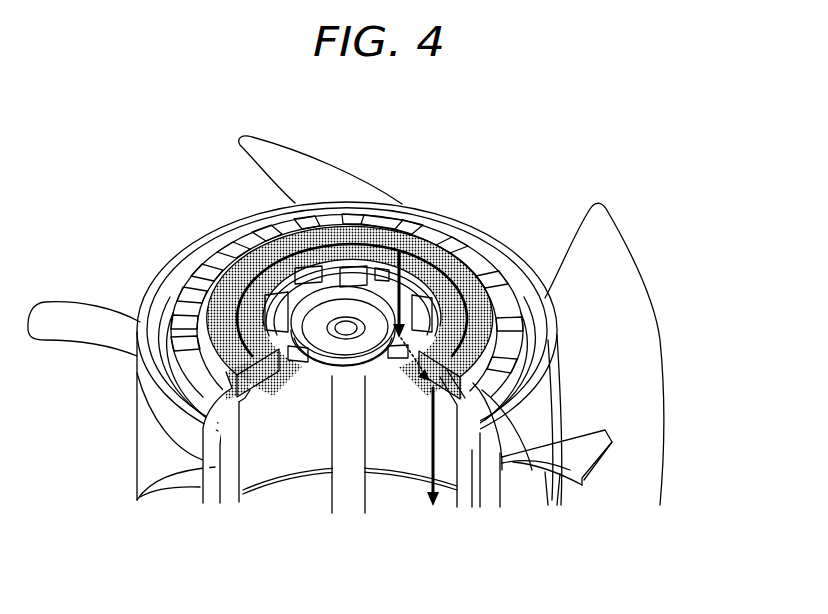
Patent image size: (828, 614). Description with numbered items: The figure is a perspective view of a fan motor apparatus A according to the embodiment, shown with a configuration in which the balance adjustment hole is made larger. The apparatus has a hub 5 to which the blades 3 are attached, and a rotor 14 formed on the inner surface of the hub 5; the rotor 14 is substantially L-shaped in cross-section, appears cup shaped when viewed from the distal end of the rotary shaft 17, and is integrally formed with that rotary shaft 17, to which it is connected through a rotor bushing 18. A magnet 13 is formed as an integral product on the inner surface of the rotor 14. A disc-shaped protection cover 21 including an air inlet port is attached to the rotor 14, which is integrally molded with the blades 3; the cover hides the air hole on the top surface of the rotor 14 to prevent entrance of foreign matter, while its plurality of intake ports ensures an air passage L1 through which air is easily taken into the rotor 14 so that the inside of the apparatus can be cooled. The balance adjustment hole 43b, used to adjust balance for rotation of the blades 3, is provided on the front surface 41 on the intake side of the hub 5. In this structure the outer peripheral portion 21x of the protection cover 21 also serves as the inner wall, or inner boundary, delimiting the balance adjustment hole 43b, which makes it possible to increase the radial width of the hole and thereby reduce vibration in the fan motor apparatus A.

The blades 3 is at (656, 332).
The hub 5 is at (142, 448).
The magnet 13 is at (239, 490).
The rotor 14 is at (206, 487).
The rotary shaft 17 is at (333, 487).
The rotor bushing 18 is at (310, 380).
The protection cover 21 is at (447, 253).
The outer peripheral portion 21x is at (402, 217).
The front surface 41 is at (188, 256).
The balance adjustment hole 43b is at (371, 221).
The fan motor apparatus A is at (534, 157).
The air passage L1 is at (416, 396).